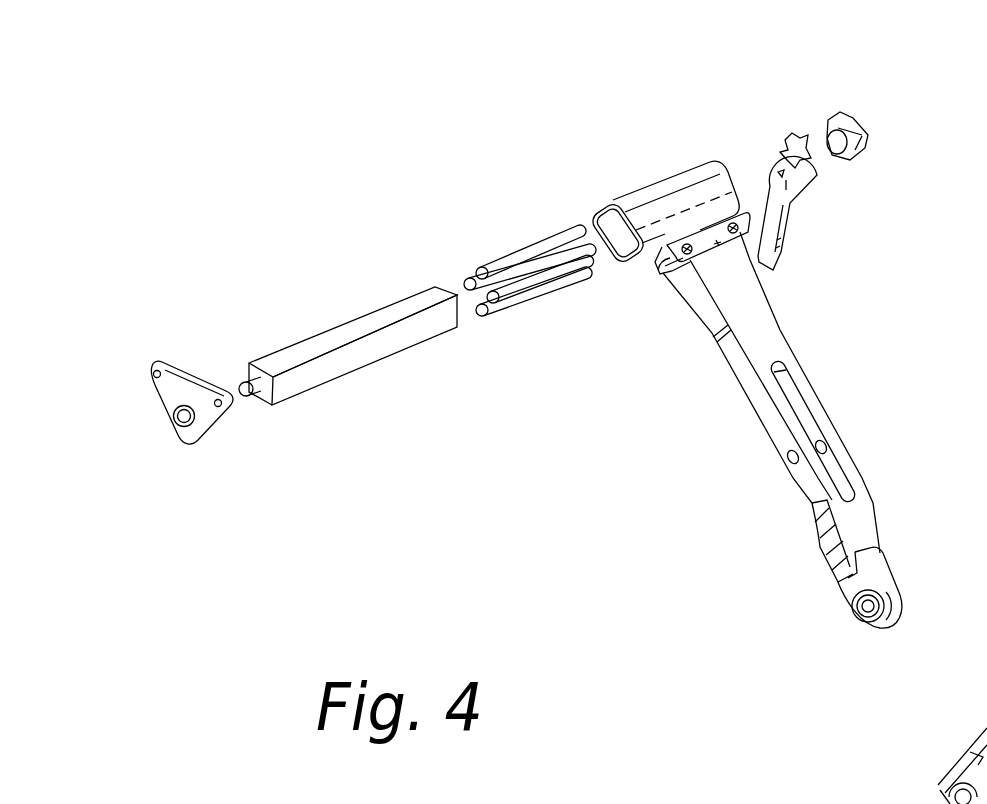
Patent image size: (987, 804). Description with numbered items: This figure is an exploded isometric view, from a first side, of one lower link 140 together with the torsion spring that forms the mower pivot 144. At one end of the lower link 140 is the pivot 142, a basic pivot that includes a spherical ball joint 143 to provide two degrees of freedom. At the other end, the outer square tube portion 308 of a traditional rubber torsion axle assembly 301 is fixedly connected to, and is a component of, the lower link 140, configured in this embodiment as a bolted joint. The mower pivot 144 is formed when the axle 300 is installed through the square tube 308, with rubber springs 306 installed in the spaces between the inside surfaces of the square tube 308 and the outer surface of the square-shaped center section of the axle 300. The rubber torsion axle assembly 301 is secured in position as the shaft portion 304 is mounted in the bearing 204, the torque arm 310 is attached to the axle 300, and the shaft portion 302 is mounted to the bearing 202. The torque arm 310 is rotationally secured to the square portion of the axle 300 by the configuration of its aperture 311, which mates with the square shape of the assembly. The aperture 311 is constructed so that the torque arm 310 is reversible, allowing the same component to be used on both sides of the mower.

The lower link 140 is at (760, 427).
The pivot 142 is at (840, 617).
The spherical ball joint 143 is at (873, 627).
The mower pivot 144 is at (190, 487).
The bearing 202 is at (858, 162).
The bearing 204 is at (198, 419).
The axle 300 is at (345, 323).
The rubber torsion axle assembly 301 is at (338, 149).
The shaft portion 302 is at (457, 293).
The shaft portion 304 is at (258, 398).
The rubber springs 306 is at (572, 228).
The outer square tube portion 308 is at (658, 182).
The torque arm 310 is at (790, 203).
The aperture 311 is at (818, 193).